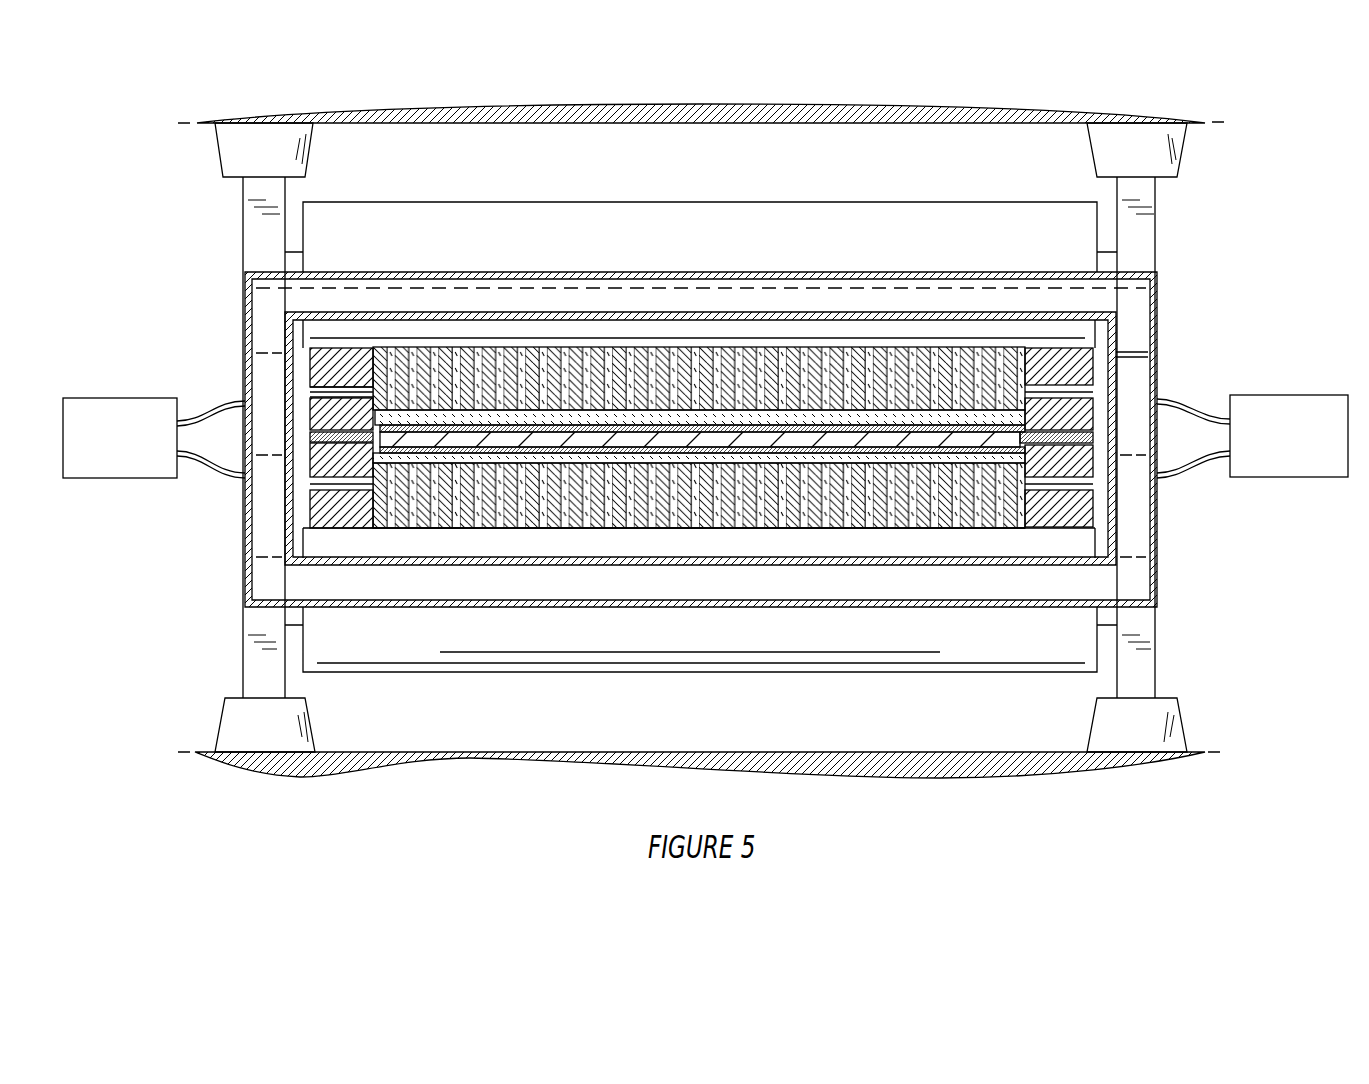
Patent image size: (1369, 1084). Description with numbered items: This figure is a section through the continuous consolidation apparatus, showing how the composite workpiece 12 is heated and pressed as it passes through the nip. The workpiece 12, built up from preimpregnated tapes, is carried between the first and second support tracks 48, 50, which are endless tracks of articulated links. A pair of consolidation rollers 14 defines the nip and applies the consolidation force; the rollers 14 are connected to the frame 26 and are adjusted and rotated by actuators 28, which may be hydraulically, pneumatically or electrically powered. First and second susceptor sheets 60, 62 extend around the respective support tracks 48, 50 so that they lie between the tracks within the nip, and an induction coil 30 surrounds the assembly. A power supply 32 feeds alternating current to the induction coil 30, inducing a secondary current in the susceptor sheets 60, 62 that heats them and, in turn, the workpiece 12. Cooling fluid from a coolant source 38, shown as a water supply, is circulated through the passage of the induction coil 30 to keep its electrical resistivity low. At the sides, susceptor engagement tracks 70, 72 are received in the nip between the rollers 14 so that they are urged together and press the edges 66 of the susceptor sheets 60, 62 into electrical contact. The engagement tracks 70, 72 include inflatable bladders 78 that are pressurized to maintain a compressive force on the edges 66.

The composite workpiece 12 is at (857, 440).
The consolidation rollers 14 is at (975, 202).
The frame 26 is at (852, 122).
The actuators 28 is at (215, 153).
The induction coil 30 is at (1158, 390).
The power supply 32 is at (140, 480).
The coolant source 38 is at (1282, 395).
The first support track 48 is at (955, 528).
The second support track 50 is at (953, 349).
The first susceptor sheet 60 is at (490, 530).
The second susceptor sheet 62 is at (318, 396).
The edges 66 is at (318, 465).
The susceptor engagement track 70 is at (312, 520).
The susceptor engagement track 72 is at (312, 373).
The inflatable bladder 78 is at (318, 390).